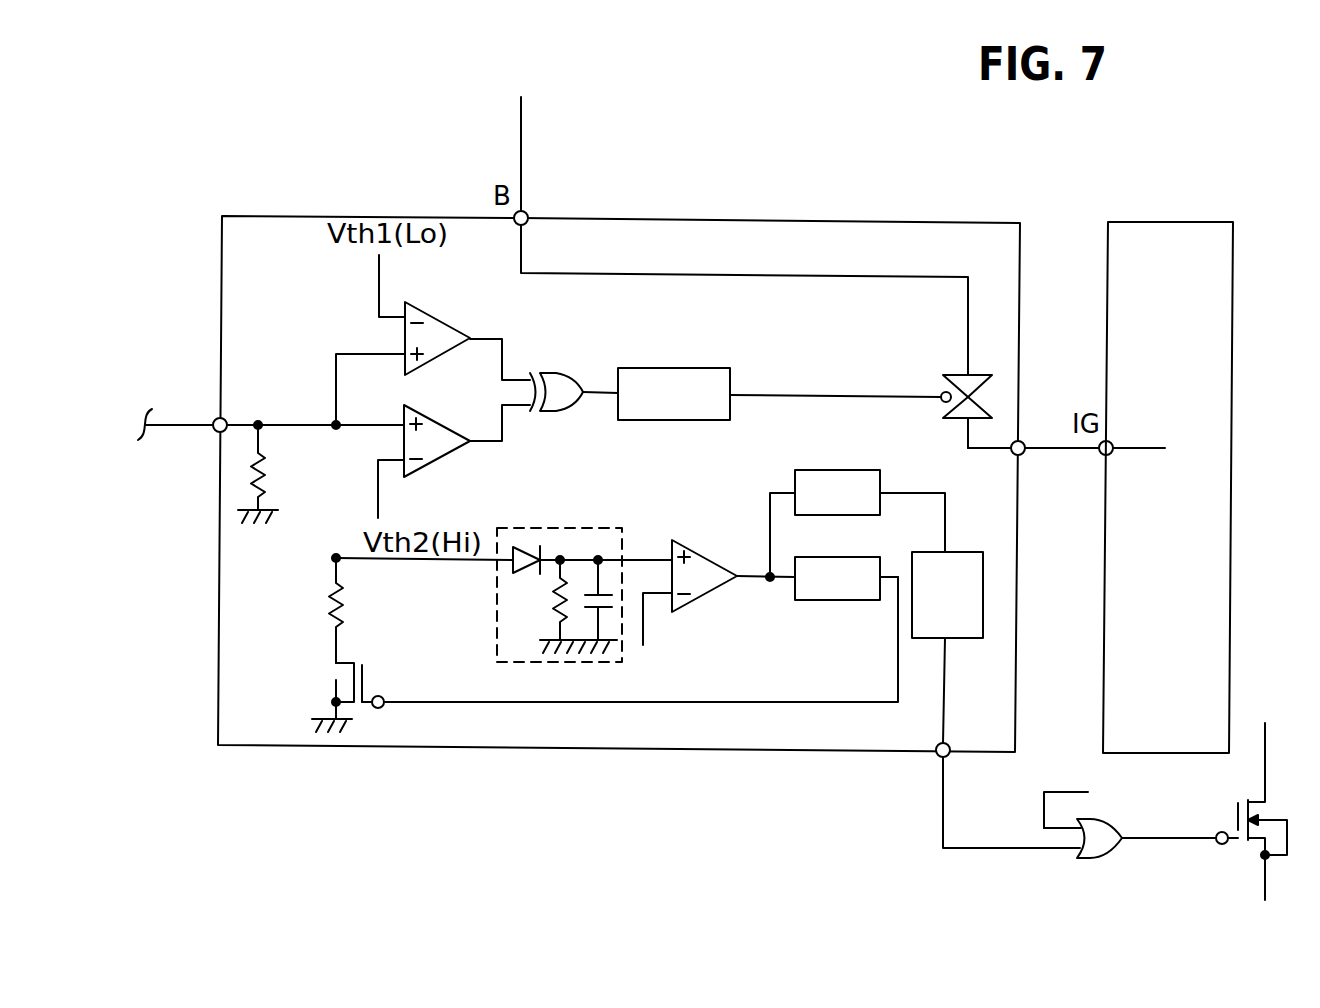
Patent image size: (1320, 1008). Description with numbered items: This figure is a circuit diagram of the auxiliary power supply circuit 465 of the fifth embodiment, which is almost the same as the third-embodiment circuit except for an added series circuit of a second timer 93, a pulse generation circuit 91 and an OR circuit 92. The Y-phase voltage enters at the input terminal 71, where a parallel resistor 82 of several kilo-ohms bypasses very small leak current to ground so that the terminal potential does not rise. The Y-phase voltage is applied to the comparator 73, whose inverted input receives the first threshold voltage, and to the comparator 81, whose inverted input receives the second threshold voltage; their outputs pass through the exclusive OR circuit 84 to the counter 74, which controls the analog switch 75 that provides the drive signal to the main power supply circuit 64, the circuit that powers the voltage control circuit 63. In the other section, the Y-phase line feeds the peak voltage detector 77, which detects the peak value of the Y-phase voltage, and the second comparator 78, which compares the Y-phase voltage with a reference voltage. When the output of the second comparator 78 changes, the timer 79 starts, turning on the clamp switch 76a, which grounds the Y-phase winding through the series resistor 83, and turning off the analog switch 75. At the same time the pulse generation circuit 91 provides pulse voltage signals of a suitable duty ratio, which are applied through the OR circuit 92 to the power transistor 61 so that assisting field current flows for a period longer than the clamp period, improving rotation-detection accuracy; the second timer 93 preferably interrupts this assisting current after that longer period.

The auxiliary power supply circuit 465 is at (555, 748).
The input terminal 71 is at (215, 434).
The resistor 82 is at (268, 477).
The comparator 73 is at (445, 312).
The comparator 81 is at (445, 412).
The exclusive OR circuit 84 is at (553, 375).
The counter 74 is at (663, 368).
The analog switch 75 is at (950, 373).
The main power supply circuit 64 is at (1122, 272).
The resistor 83 is at (343, 608).
The clamp switch 76a is at (352, 680).
The peak voltage detector 77 is at (497, 585).
The second comparator 78 is at (713, 557).
The second timer 93 is at (857, 470).
The timer 79 is at (842, 600).
The pulse generation circuit 91 is at (957, 555).
The OR circuit 92 is at (1120, 848).
The voltage control circuit 63 is at (1093, 793).
The power transistor 61 is at (1270, 815).